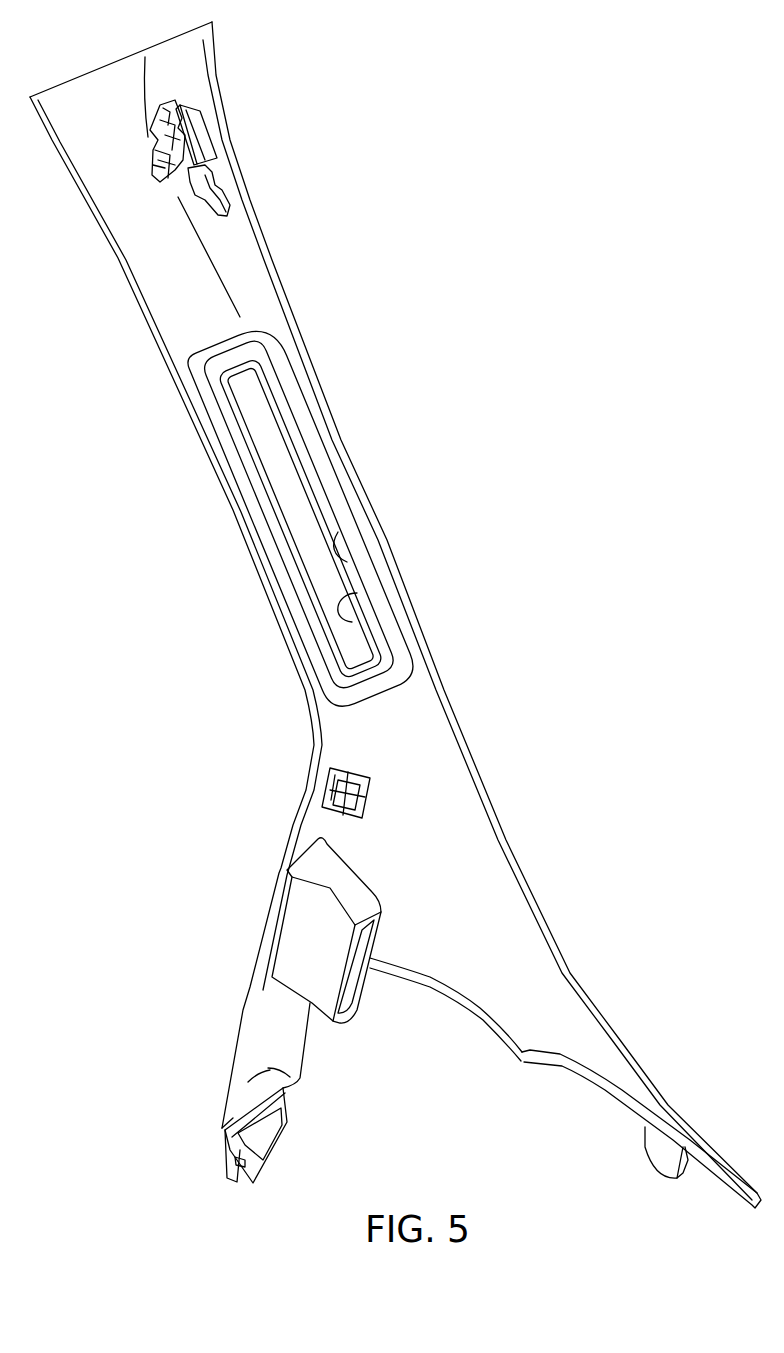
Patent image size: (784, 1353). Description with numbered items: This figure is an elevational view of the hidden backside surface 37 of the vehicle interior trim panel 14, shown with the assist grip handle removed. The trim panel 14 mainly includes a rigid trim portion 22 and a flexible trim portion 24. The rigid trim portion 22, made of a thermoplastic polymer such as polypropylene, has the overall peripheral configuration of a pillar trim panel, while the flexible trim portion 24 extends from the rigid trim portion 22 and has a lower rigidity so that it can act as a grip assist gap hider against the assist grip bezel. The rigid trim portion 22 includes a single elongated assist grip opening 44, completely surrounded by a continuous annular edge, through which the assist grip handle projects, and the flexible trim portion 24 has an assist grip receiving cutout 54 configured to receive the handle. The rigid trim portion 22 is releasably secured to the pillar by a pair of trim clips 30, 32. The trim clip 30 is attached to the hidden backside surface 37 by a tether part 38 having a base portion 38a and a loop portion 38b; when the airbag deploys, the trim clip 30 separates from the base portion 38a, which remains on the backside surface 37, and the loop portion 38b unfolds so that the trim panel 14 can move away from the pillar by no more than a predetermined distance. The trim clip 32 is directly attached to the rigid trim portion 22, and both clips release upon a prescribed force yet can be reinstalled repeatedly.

The vehicle interior trim panel 14 is at (476, 771).
The rigid trim portion 22 is at (330, 405).
The flexible trim portion 24 is at (314, 498).
The trim clip 30 is at (153, 163).
The trim clip 32 is at (325, 788).
The hidden backside surface 37 is at (472, 885).
The tether part 38 is at (158, 129).
The base portion 38a is at (203, 128).
The loop portion 38b is at (185, 188).
The assist grip opening 44 is at (347, 561).
The assist grip receiving cutout 54 is at (337, 622).